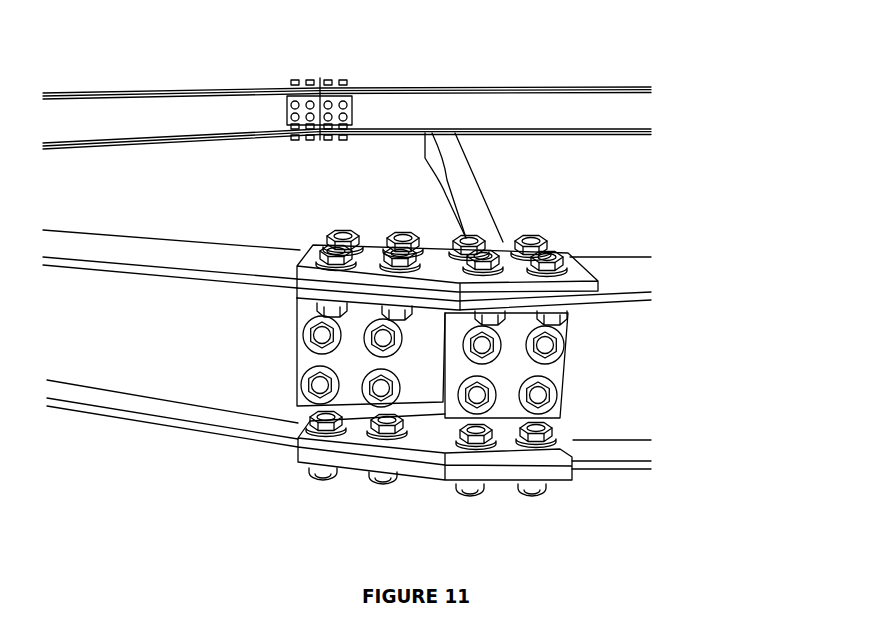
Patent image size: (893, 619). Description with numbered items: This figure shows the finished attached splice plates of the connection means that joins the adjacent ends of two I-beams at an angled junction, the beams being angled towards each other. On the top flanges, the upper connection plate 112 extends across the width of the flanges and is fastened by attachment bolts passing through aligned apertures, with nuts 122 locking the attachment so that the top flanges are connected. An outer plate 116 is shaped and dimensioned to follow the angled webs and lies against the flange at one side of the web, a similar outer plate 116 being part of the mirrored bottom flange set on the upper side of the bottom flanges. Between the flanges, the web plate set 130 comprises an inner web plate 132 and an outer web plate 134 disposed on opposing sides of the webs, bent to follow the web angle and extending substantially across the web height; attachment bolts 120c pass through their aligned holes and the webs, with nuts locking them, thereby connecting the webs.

The upper connection plate 112 is at (433, 238).
The outer plate 116 is at (593, 307).
The attachment bolts 120c is at (552, 349).
The nuts 122 is at (318, 309).
The web plate set 130 is at (338, 230).
The inner web plate 132 is at (351, 108).
The outer web plate 134 is at (560, 373).